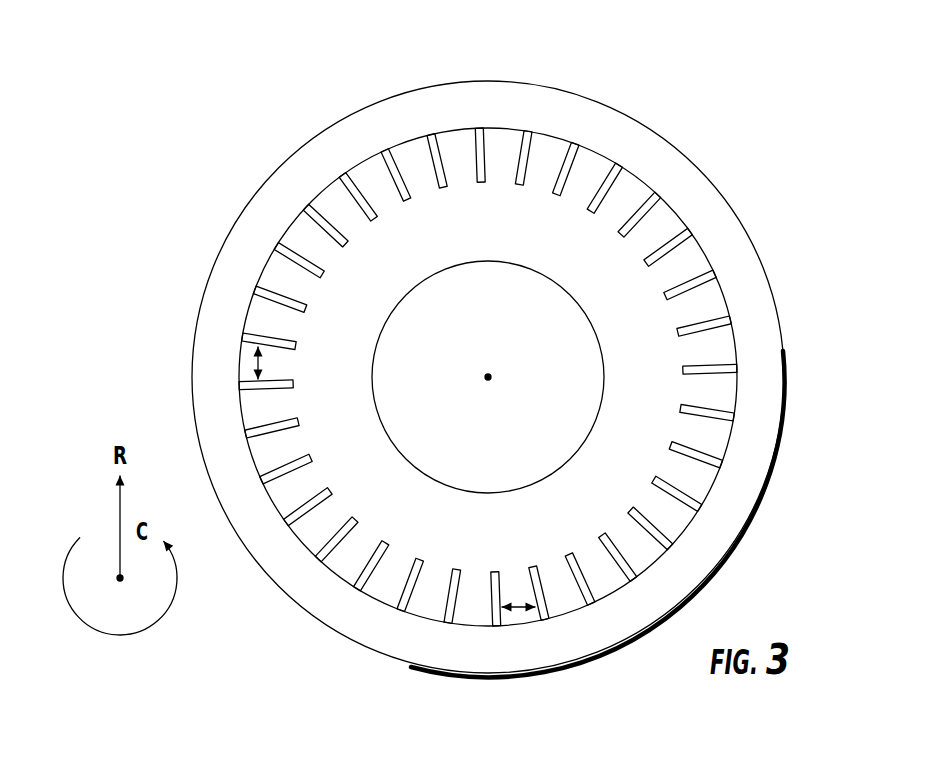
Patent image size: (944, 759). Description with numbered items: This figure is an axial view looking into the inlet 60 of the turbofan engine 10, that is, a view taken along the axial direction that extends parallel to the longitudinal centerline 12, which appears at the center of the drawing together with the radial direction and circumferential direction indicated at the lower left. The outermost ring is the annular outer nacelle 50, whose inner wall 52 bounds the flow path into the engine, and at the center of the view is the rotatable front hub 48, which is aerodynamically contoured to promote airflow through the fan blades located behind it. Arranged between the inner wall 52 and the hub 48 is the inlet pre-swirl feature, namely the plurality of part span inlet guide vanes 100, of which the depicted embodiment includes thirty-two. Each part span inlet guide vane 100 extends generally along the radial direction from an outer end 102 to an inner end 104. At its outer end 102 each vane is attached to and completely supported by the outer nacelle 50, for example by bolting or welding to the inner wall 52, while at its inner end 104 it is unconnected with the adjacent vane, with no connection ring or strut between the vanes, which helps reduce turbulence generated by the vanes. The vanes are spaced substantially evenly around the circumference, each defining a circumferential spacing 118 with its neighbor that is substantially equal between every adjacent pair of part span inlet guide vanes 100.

The turbofan engine 10 is at (753, 77).
The longitudinal centerline 12 is at (489, 372).
The hub 48 is at (605, 357).
The outer nacelle 50 is at (411, 99).
The inner wall 52 is at (505, 133).
The inlet 60 is at (661, 223).
The part span inlet guide vanes 100 is at (282, 251).
The outer end 102 is at (269, 245).
The inner end 104 is at (327, 279).
The circumferential spacing 118 is at (262, 365).